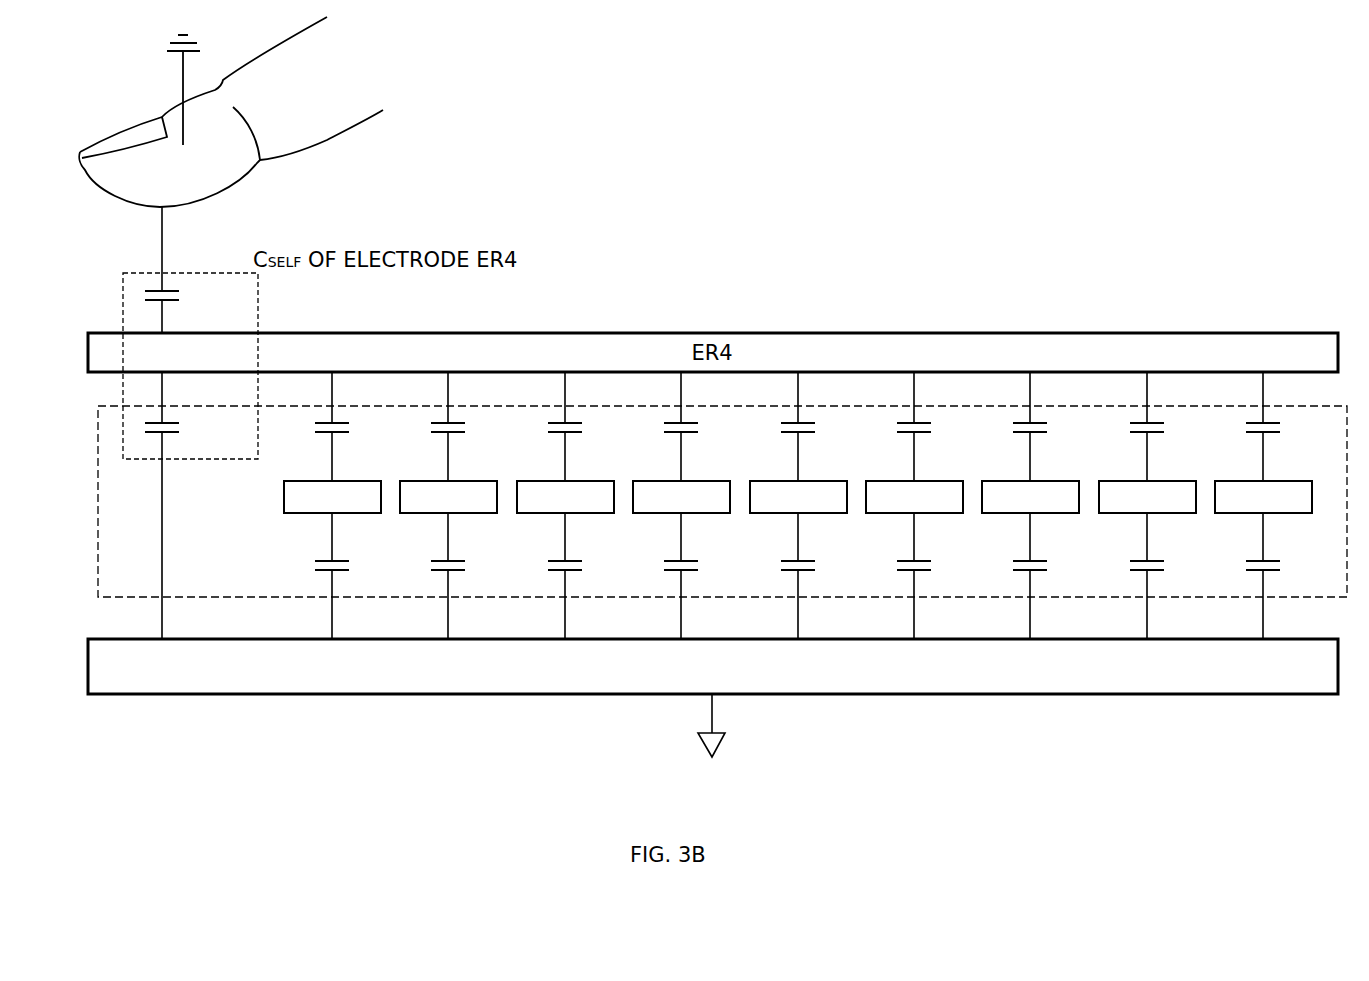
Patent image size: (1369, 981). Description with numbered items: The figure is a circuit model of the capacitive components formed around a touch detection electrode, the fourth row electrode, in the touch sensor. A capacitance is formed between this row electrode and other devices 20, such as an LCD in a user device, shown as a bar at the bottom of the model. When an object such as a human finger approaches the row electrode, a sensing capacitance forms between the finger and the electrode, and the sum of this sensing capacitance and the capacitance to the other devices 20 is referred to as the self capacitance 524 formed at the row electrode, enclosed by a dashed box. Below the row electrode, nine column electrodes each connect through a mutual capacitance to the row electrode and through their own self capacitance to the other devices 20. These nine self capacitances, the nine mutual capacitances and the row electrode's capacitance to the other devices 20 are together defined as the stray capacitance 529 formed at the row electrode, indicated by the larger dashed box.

The self capacitance 524 is at (148, 273).
The stray capacitance 529 is at (115, 406).
The other devices 20 is at (112, 639).